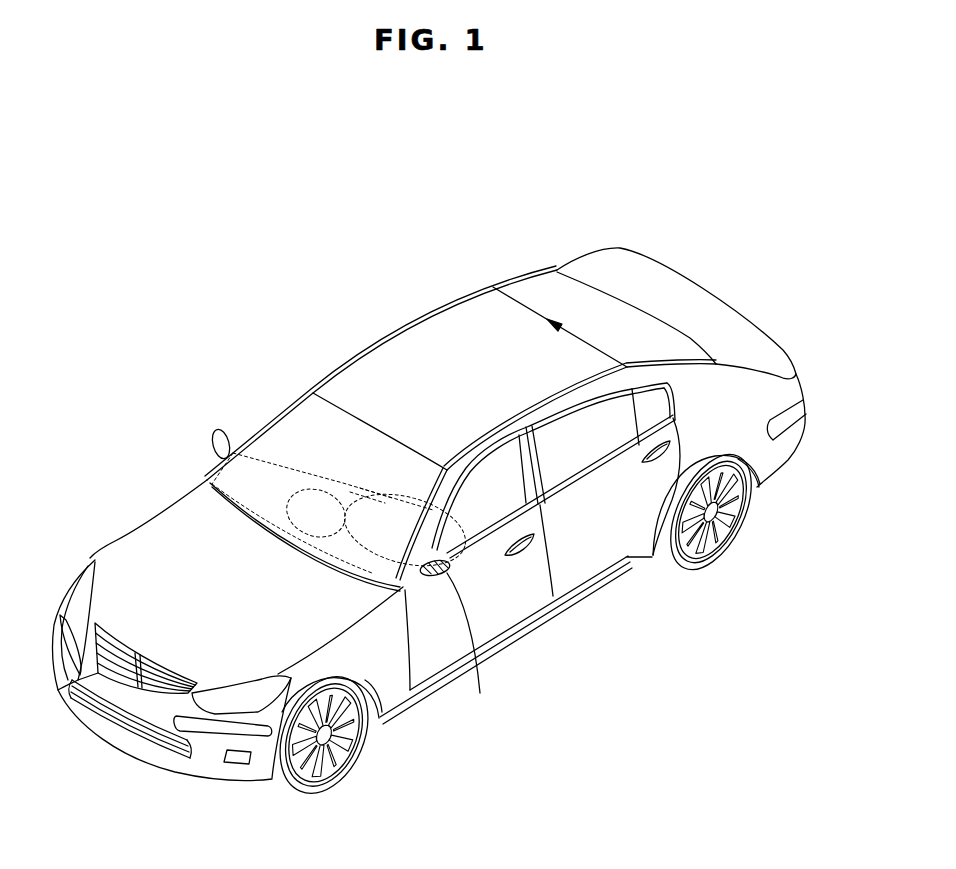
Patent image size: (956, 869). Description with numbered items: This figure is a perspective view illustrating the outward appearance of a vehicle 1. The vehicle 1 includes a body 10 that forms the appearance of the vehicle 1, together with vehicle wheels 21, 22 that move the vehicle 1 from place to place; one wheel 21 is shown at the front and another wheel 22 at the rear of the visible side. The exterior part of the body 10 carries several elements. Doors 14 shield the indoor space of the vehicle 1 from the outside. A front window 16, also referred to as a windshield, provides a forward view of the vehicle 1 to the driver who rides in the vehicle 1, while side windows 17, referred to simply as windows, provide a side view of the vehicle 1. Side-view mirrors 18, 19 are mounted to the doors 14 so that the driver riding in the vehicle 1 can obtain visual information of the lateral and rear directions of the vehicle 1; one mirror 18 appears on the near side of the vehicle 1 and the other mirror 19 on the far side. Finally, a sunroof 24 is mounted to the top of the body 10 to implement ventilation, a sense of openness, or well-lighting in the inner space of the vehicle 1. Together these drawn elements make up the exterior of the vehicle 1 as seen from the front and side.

The vehicle 1 is at (167, 149).
The body 10 is at (587, 241).
The doors 14 is at (513, 608).
The front window 16 is at (293, 420).
The side windows 17 is at (488, 490).
The side-view mirror 18 is at (480, 693).
The side-view mirror 19 is at (213, 440).
The vehicle wheel 21 is at (348, 760).
The vehicle wheel 22 is at (727, 543).
The sunroof 24 is at (377, 377).